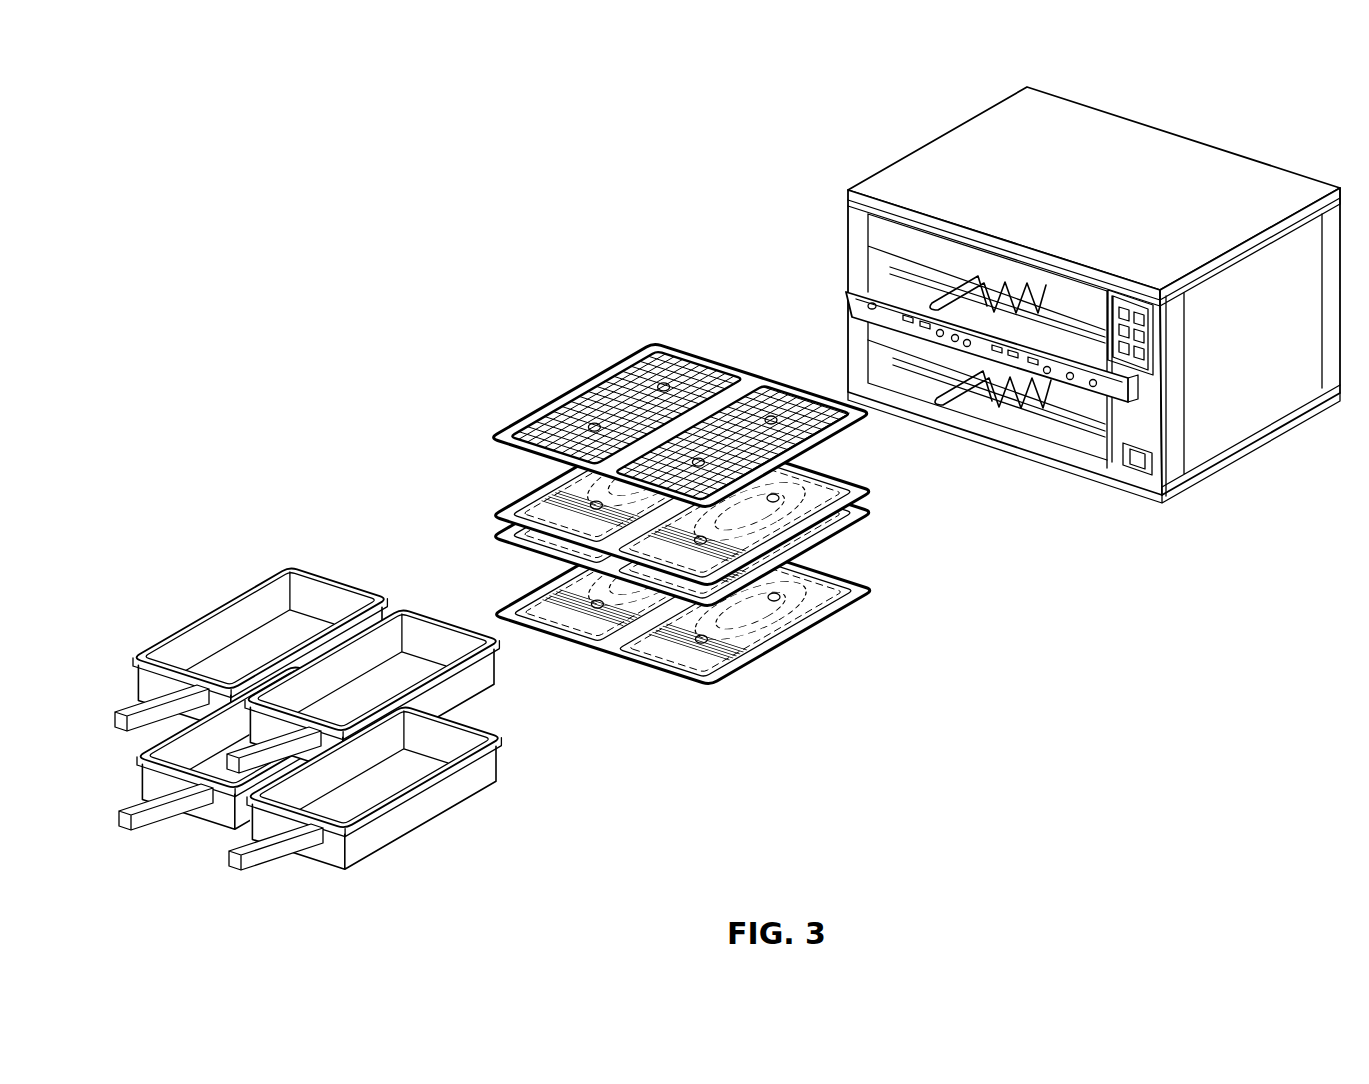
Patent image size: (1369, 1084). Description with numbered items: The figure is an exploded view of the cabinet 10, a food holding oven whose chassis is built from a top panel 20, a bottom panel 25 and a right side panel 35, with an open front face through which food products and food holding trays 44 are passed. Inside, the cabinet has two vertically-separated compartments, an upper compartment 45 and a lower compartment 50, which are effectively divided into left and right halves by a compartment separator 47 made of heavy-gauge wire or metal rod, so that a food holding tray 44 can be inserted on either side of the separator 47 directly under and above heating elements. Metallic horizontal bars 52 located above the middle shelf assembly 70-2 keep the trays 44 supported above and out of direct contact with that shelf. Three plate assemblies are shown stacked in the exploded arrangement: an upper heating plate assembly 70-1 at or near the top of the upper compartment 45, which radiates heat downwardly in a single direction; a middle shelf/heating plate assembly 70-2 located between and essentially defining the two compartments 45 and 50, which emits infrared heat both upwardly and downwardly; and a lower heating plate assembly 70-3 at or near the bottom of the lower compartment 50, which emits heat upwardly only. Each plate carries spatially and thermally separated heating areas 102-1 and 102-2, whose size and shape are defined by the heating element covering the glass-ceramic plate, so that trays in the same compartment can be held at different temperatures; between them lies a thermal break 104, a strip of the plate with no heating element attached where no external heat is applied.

The cabinet 10 is at (1047, 299).
The top panel 20 is at (1236, 177).
The bottom panel 25 is at (1207, 484).
The right side panel 35 is at (1258, 414).
The food holding trays 44 is at (118, 641).
The upper compartment 45 is at (883, 240).
The compartment separator 47 is at (955, 286).
The lower compartment 50 is at (890, 344).
The metallic horizontal bars 52 is at (1057, 307).
The upper heating plate assembly 70-1 is at (498, 435).
The middle shelf/heating plate assembly 70-2 is at (875, 486).
The lower heating plate assembly 70-3 is at (838, 613).
The heating area 102-1 is at (603, 390).
The heating area 102-2 is at (838, 420).
The thermal break 104 is at (598, 648).